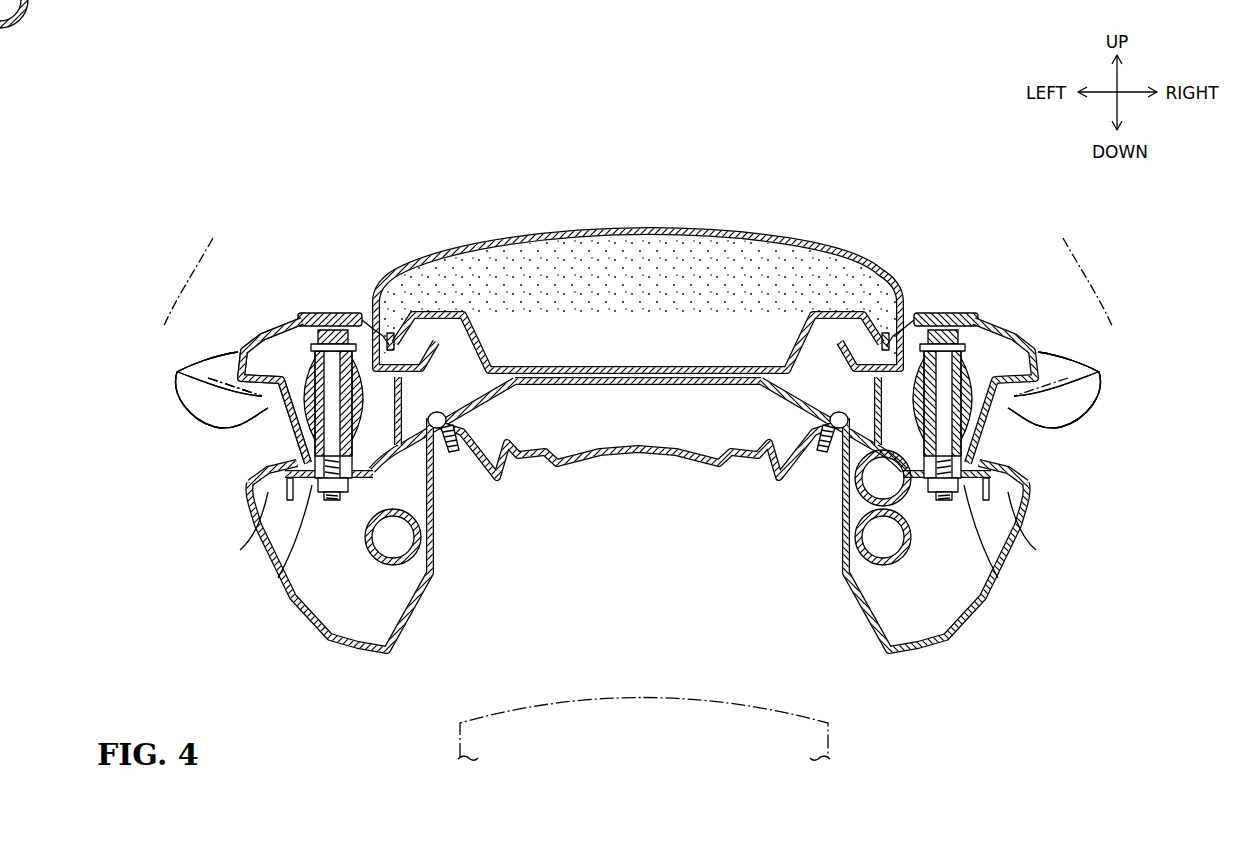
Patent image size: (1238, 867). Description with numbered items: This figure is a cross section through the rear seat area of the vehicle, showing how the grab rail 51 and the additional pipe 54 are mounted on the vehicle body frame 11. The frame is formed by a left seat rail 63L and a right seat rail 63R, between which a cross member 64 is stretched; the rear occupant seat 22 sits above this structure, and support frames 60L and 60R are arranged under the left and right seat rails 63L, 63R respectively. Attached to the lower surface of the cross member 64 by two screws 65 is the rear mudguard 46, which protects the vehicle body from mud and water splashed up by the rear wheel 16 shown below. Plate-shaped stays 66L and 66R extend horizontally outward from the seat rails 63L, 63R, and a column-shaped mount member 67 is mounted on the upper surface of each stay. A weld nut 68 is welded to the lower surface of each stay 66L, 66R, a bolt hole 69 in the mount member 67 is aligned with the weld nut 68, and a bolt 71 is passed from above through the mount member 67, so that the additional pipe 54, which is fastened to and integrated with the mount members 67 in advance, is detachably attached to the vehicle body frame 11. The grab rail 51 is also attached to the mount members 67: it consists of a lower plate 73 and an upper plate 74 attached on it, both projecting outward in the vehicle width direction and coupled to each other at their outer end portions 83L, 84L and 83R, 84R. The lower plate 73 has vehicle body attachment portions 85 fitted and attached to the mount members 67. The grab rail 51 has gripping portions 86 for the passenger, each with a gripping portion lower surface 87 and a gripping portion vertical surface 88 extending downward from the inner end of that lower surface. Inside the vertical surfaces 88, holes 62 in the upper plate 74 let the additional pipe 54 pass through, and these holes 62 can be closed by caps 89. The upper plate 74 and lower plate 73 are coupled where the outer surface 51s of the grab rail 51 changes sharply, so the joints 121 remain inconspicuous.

The vehicle body frame 11 is at (876, 580).
The rear wheel 16 is at (832, 741).
The rear occupant seat 22 is at (646, 218).
The rear mudguard 46 is at (690, 458).
The grab rail 51 is at (268, 326).
The outer surface of the grab rail 51s is at (238, 351).
The additional pipe 54 is at (257, 338).
The left support frame 60L is at (421, 540).
The right support frame 60R is at (855, 540).
The hole 62 is at (304, 317).
The left seat rail 63L is at (420, 487).
The right seat rail 63R is at (856, 487).
The cross member 64 is at (650, 388).
The screw 65 is at (450, 450).
The left stay 66L is at (262, 500).
The right stay 66R is at (968, 534).
The mount member 67 is at (308, 368).
The weld nut 68 is at (310, 490).
The bolt hole 69 is at (355, 325).
The bolt 71 is at (327, 345).
The lower plate 73 is at (262, 476).
The upper plate 74 is at (230, 342).
The left outer end portion of the lower plate 83L is at (236, 370).
The right outer end portion of the lower plate 83R is at (1089, 390).
The left outer end portion of the upper plate 84L is at (238, 354).
The right outer end portion of the upper plate 84R is at (1089, 386).
The vehicle body attachment portion 85 is at (285, 475).
The gripping portion 86 is at (152, 434).
The gripping portion lower surface 87 is at (288, 400).
The gripping portion vertical surface 88 is at (297, 415).
The cap 89 is at (333, 331).
The joint 121 is at (233, 362).